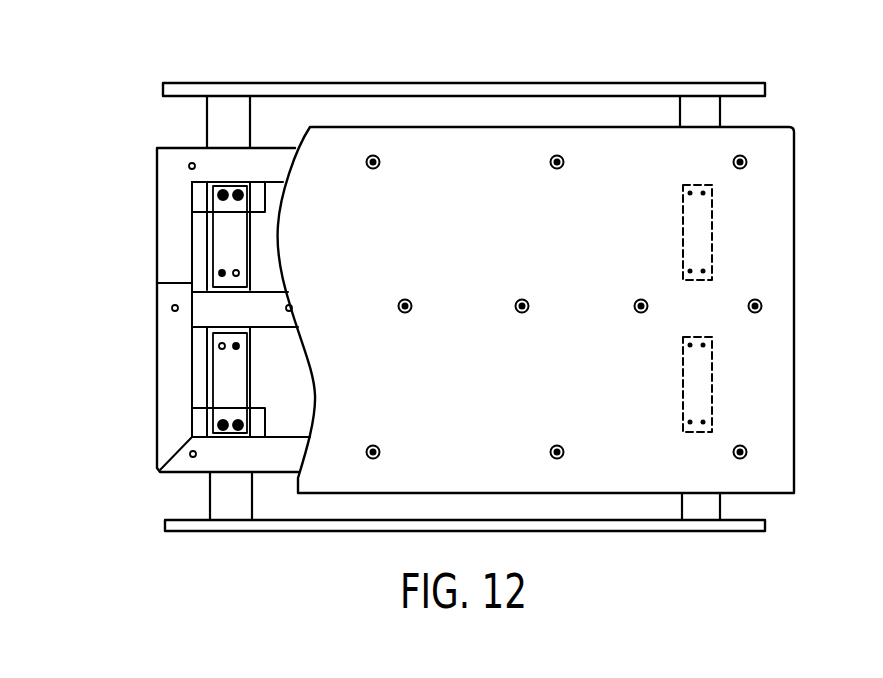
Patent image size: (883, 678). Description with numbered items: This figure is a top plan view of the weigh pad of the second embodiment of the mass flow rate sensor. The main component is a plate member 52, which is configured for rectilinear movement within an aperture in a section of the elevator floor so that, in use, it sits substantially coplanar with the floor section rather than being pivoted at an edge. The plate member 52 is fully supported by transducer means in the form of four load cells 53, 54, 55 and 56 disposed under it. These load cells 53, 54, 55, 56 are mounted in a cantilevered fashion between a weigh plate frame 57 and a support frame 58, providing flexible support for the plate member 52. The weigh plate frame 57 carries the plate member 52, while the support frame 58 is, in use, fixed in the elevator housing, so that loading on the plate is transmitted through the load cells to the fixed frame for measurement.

The plate member 52 is at (474, 240).
The load cell 53 is at (222, 240).
The load cell 54 is at (228, 374).
The load cell 55 is at (705, 238).
The load cell 56 is at (700, 388).
The weigh plate frame 57 is at (278, 452).
The support frame 58 is at (588, 92).